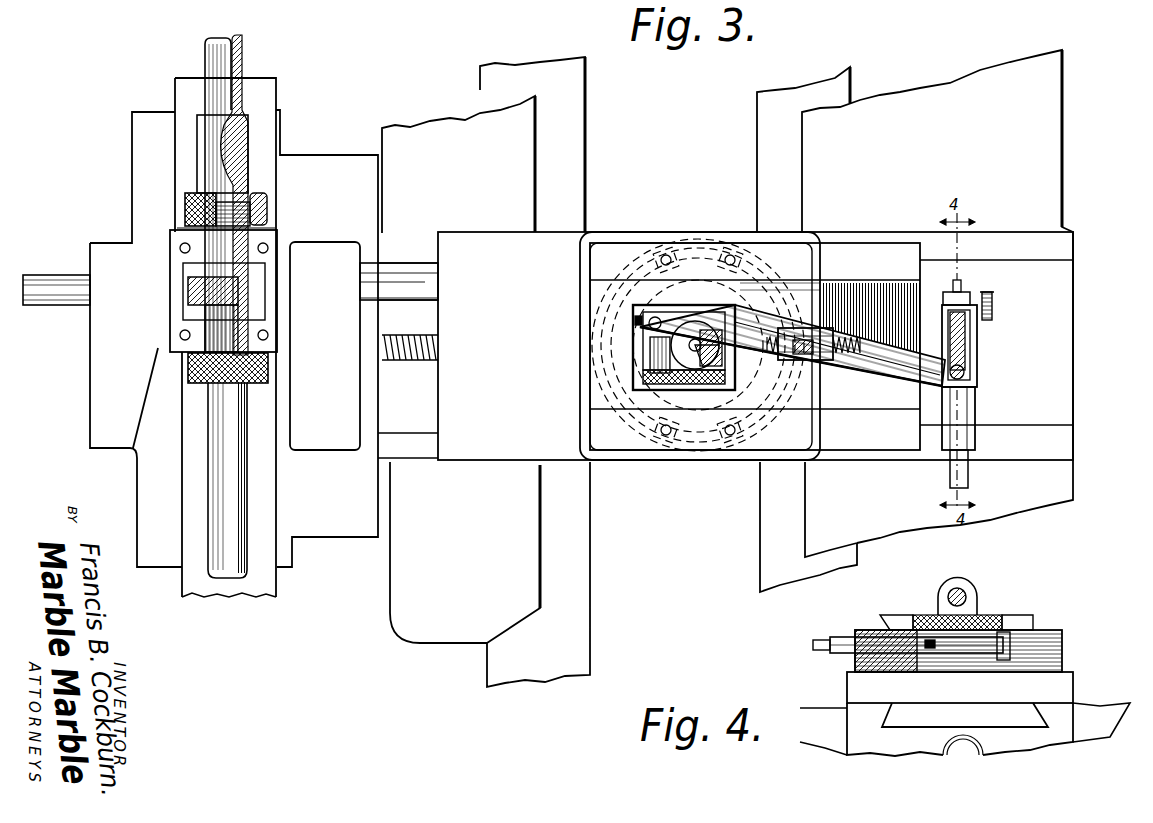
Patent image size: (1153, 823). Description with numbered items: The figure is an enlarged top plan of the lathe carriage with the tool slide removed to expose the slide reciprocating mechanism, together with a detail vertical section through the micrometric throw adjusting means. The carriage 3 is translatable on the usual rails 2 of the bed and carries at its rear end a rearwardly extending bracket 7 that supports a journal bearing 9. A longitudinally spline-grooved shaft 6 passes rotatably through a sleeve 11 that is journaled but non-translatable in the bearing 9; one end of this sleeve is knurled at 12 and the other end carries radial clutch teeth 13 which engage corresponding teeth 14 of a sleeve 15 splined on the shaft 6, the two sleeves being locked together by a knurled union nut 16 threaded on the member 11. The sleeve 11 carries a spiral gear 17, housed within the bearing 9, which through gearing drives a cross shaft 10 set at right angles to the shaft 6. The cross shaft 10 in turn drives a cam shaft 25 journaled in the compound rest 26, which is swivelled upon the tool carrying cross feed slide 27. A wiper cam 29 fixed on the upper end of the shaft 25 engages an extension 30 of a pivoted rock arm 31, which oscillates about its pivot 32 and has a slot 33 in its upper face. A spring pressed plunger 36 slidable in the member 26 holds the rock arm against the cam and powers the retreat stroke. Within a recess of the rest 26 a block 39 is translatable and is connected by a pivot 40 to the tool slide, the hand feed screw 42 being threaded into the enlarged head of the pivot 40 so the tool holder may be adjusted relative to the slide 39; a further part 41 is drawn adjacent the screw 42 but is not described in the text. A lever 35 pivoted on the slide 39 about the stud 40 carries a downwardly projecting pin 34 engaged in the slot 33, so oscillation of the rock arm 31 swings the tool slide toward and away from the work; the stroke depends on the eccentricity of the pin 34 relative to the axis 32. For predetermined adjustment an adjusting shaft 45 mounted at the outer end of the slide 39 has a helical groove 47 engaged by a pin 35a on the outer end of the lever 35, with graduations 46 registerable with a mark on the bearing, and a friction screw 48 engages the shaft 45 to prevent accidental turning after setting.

In FIG. 3, the rails 2 is at (585, 173).
In FIG. 3, the carriage 3 is at (805, 167).
In FIG. 4, the carriage 3 is at (1085, 714).
In FIG. 3, the shaft 6 is at (242, 70).
In FIG. 3, the bracket 7 is at (336, 160).
In FIG. 3, the journal bearing 9 is at (262, 242).
In FIG. 3, the shaft 10 is at (408, 298).
In FIG. 3, the sleeve 11 is at (208, 313).
In FIG. 3, the knurled end 12 is at (190, 379).
In FIG. 3, the radial clutch teeth 13 is at (264, 204).
In FIG. 3, the teeth 14 is at (245, 196).
In FIG. 3, the sleeve 15 is at (212, 155).
In FIG. 3, the union nut 16 is at (185, 212).
In FIG. 3, the spiral gear 17 is at (188, 292).
In FIG. 3, the cam shaft 25 is at (697, 332).
In FIG. 3, the compound rest 26 is at (755, 346).
In FIG. 4, the compound rest 26 is at (1043, 638).
In FIG. 4, the cross feed slide 27 is at (960, 714).
In FIG. 3, the wiper cam 29 is at (720, 340).
In FIG. 3, the extension 30 is at (685, 322).
In FIG. 3, the rock arm 31 is at (645, 368).
In FIG. 3, the pivot 32 is at (630, 343).
In FIG. 3, the slot 33 is at (660, 385).
In FIG. 3, the pin 34 is at (652, 316).
In FIG. 3, the lever 35 is at (890, 350).
In FIG. 4, the lever 35 is at (990, 614).
In FIG. 3, the pin 35a is at (966, 371).
In FIG. 4, the pin 35a is at (932, 640).
In FIG. 3, the spring pressed plunger 36 is at (634, 320).
In FIG. 3, the block 39 is at (840, 313).
In FIG. 3, the pivot 40 is at (797, 362).
In FIG. 3, the spring 41 is at (800, 330).
In FIG. 4, the spring 41 is at (945, 586).
In FIG. 3, the hand feed screw 42 is at (847, 352).
In FIG. 4, the hand feed screw 42 is at (968, 592).
In FIG. 3, the adjusting shaft 45 is at (970, 340).
In FIG. 3, the graduations 46 is at (952, 456).
In FIG. 3, the helical groove 47 is at (957, 330).
In FIG. 4, the helical groove 47 is at (970, 646).
In FIG. 3, the friction device 48 is at (992, 297).